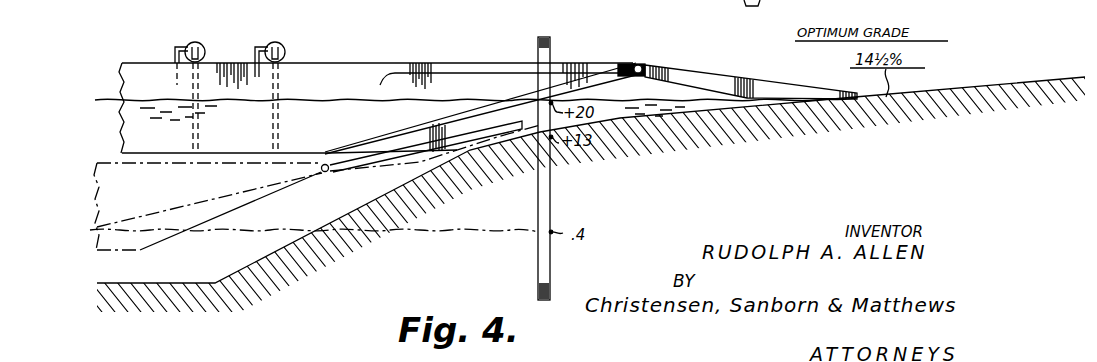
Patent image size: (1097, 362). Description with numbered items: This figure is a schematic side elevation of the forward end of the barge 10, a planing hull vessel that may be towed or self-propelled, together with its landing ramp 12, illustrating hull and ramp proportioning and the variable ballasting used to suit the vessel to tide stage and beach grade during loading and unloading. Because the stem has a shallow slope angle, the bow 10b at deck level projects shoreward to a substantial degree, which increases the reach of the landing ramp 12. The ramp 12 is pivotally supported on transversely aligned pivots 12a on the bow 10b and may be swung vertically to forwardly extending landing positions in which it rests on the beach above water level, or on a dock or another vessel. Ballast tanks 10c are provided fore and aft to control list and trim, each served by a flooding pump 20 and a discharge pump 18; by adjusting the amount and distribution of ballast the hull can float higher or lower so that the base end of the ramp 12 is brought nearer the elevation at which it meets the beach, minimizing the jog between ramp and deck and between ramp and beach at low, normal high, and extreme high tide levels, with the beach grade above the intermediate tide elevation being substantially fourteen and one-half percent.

The barge 10 is at (222, 153).
The bow 10b is at (635, 62).
The ballast tanks 10c is at (489, 63).
The landing ramp 12 is at (736, 74).
The pivots 12a is at (646, 63).
The discharge pump 18 is at (186, 44).
The flooding pump 20 is at (288, 47).